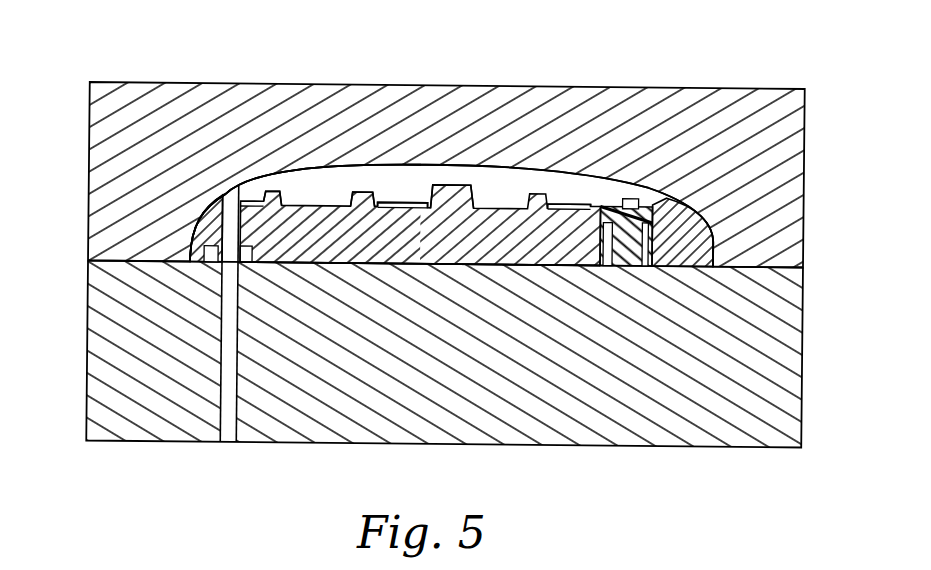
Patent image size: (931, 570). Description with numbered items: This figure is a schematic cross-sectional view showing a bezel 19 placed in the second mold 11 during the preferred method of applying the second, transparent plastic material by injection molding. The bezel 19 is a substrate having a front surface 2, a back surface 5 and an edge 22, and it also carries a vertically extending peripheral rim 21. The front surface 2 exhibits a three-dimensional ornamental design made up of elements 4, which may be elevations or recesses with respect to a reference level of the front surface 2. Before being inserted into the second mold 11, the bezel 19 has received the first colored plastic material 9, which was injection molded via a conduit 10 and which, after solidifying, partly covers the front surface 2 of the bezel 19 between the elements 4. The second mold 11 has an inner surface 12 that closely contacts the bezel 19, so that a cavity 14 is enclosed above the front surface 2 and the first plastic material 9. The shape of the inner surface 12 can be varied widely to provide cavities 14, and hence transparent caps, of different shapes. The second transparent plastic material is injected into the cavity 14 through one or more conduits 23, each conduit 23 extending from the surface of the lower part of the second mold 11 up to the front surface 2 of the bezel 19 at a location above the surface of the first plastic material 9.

The front surface 2 is at (333, 203).
The elements 4 is at (455, 185).
The back surface 5 is at (533, 265).
The first colored plastic material 9 is at (580, 203).
The conduit 10 is at (687, 233).
The second mold 11 is at (788, 310).
The inner surface 12 is at (310, 187).
The cavity 14 is at (507, 178).
The bezel 19 is at (450, 255).
The peripheral rim 21 is at (663, 198).
The edge 22 is at (190, 230).
The conduit 23 is at (228, 400).